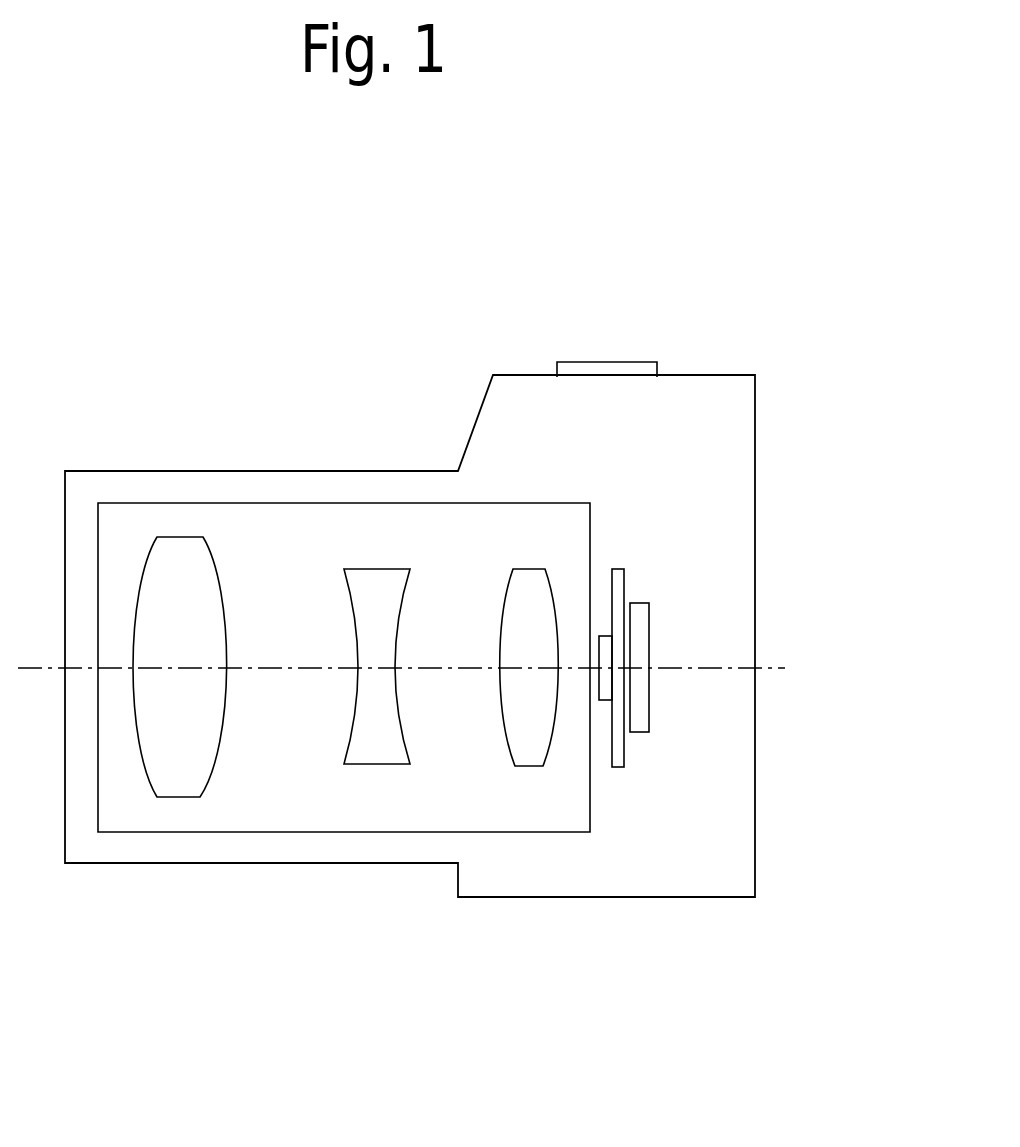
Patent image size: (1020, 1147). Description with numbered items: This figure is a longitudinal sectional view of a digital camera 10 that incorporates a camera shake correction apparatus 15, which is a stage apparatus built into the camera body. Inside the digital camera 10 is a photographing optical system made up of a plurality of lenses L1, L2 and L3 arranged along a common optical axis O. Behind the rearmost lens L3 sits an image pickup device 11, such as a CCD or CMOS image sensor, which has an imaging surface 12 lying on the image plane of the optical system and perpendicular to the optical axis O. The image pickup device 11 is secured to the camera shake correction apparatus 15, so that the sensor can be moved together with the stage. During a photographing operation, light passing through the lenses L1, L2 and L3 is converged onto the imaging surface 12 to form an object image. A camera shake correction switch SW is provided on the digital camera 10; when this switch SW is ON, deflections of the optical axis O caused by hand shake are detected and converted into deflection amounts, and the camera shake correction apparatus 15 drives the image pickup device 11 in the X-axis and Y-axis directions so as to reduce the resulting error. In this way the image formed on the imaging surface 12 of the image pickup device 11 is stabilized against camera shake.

The digital camera 10 is at (803, 385).
The image pickup device 11 is at (602, 700).
The imaging surface 12 is at (598, 680).
The camera shake correction apparatus 15 is at (628, 553).
The camera shake correction switch SW is at (603, 372).
The lens L1 is at (182, 587).
The lens L2 is at (379, 603).
The lens L3 is at (533, 598).
The optical axis O is at (692, 668).